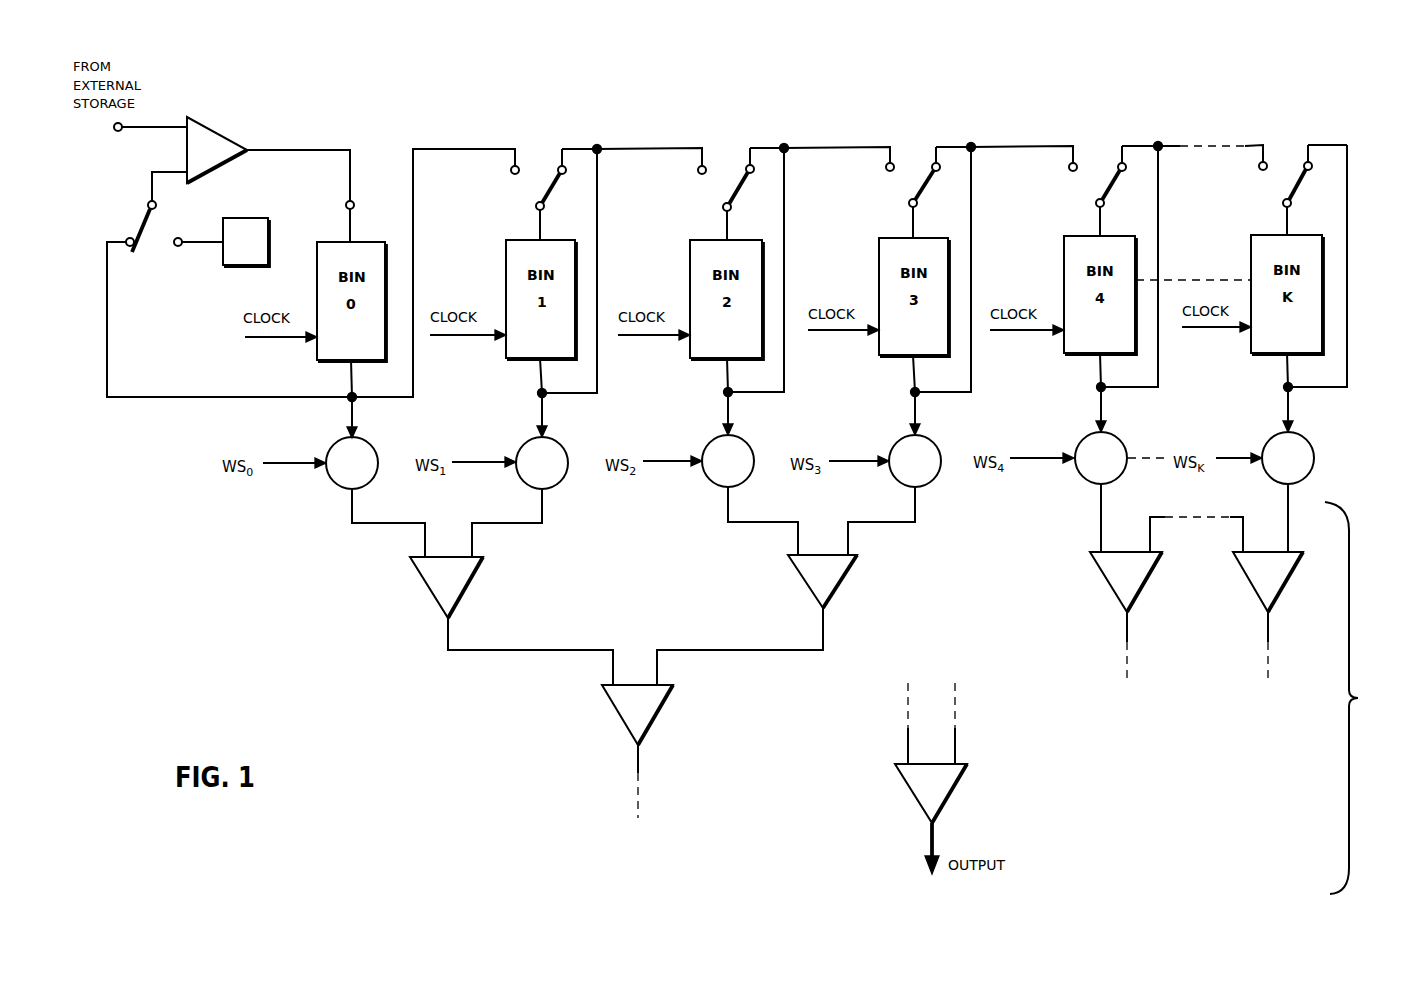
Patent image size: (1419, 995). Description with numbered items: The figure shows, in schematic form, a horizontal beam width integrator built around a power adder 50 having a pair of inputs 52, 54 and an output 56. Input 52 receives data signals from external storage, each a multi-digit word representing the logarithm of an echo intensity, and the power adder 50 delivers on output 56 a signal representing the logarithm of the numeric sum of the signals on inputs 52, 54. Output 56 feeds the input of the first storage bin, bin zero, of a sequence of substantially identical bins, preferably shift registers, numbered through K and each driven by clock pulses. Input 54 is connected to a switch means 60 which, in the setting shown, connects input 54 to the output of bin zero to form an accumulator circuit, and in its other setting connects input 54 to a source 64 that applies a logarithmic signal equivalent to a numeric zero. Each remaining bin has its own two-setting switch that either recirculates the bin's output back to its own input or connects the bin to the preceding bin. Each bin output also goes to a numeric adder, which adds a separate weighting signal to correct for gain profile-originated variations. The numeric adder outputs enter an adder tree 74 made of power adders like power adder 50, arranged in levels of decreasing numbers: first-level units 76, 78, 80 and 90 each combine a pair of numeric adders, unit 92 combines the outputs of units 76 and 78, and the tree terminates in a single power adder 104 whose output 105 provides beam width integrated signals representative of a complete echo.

The power adder 50 is at (212, 144).
The input 52 is at (152, 123).
The input 54 is at (162, 168).
The output 56 is at (270, 150).
The switch means 60 is at (138, 223).
The source 64 is at (252, 218).
The adder tree 74 is at (1315, 642).
The power adder 76 is at (437, 577).
The power adder 78 is at (810, 575).
The power adder 80 is at (1120, 577).
The power adder 90 is at (1262, 577).
The power adder 92 is at (642, 705).
The power adder 104 is at (937, 782).
The output 105 is at (931, 846).